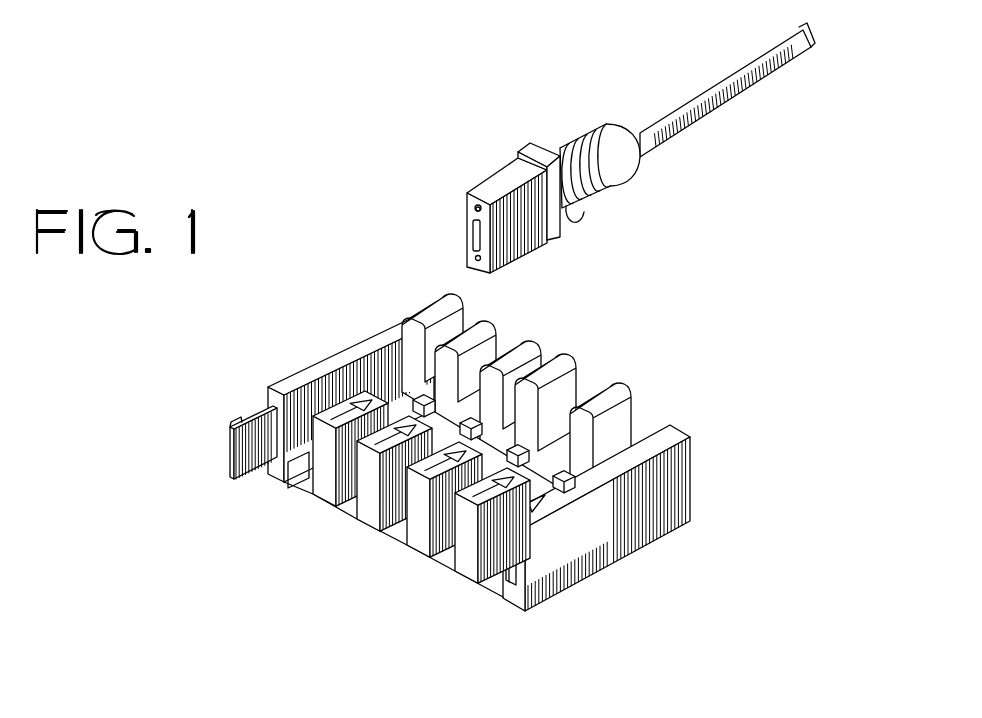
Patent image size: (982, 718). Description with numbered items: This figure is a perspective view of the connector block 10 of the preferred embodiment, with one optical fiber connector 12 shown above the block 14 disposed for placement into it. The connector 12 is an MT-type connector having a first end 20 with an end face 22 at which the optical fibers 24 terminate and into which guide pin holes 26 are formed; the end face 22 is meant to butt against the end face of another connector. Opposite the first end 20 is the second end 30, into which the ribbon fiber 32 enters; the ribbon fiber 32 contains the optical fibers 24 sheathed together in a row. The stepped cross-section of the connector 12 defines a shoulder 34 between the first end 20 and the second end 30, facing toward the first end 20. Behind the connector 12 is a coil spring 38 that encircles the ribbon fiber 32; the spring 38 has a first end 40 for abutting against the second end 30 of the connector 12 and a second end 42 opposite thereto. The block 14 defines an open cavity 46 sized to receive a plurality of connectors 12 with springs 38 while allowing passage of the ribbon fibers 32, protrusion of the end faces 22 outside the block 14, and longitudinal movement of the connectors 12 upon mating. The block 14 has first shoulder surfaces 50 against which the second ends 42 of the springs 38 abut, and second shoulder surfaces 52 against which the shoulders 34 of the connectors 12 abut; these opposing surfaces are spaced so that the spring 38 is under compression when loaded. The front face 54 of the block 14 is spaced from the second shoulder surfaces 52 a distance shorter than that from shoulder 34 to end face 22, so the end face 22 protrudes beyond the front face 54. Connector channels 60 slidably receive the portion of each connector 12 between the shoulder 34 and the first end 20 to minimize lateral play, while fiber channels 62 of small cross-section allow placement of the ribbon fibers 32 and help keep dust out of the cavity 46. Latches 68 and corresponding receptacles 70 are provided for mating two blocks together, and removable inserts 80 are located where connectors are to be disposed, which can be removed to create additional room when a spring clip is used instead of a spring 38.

The connector block 10 is at (481, 484).
The optical fiber connector 12 is at (571, 173).
The block 14 is at (503, 558).
The first end 20 is at (466, 218).
The end face 22 is at (477, 209).
The optical fibers 24 is at (474, 237).
The guide pin holes 26 is at (475, 210).
The second end 30 is at (537, 147).
The ribbon fiber 32 is at (713, 103).
The shoulder 34 is at (538, 230).
The spring 38 is at (667, 212).
The first end of spring 40 is at (572, 210).
The second end of spring 42 is at (637, 167).
The open cavity 46 is at (370, 370).
The first shoulder surfaces 50 is at (533, 403).
The second shoulder surfaces 52 is at (367, 370).
The front face 54 is at (463, 567).
The connector channels 60 is at (393, 525).
The fiber channels 62 is at (430, 360).
The latches 68 is at (235, 456).
The receptacles 70 is at (510, 587).
The inserts 80 is at (302, 460).